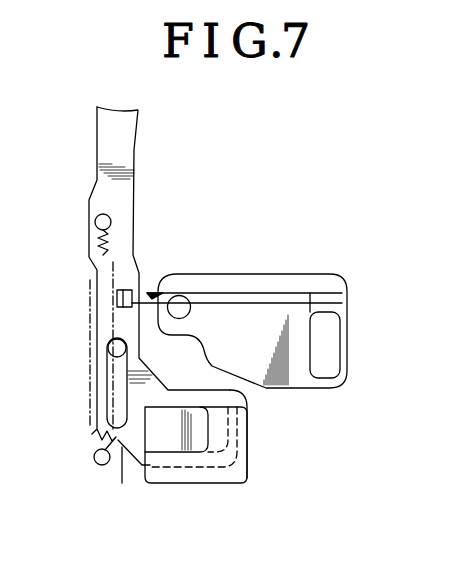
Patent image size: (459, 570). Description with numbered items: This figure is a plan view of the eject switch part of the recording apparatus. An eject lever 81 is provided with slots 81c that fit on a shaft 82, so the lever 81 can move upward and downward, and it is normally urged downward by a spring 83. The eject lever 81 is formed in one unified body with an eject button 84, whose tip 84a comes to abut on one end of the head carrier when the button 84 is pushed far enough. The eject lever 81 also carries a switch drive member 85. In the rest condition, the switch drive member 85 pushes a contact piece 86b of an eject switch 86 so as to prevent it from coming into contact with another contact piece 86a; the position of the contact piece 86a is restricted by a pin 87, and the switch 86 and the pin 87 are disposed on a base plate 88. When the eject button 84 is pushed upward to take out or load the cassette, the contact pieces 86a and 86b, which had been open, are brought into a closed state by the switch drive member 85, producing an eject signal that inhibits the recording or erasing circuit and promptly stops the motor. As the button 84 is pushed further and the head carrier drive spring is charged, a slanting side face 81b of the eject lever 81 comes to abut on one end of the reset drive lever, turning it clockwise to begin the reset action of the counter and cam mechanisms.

The eject lever 81 is at (97, 147).
The slanting side face 81b is at (230, 392).
The slots 81c is at (122, 482).
The shaft 82 is at (108, 346).
The spring 83 is at (92, 434).
The eject button 84 is at (203, 474).
The tip of the eject button 84a is at (238, 394).
The switch drive member 85 is at (117, 298).
The eject switch 86 is at (332, 334).
The contact piece 86a is at (238, 292).
The contact piece 86b is at (290, 302).
The pin 87 is at (180, 304).
The base plate 88 is at (302, 372).